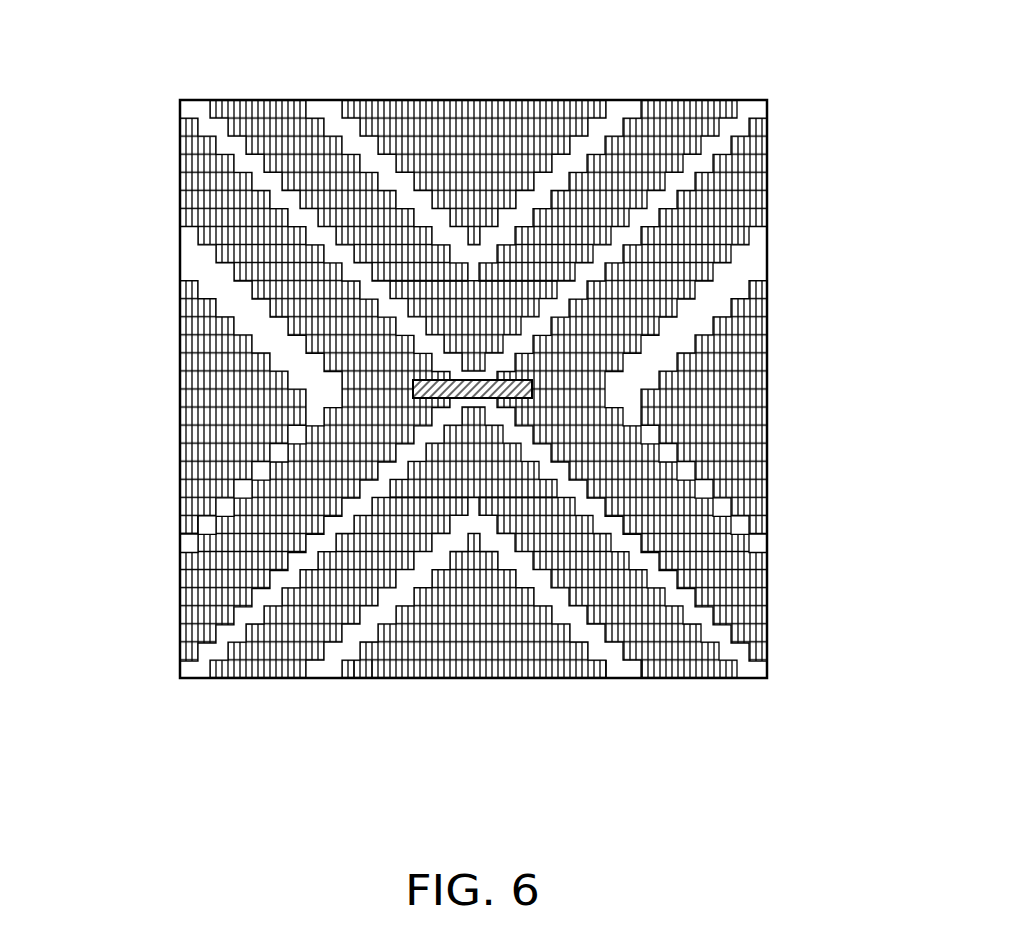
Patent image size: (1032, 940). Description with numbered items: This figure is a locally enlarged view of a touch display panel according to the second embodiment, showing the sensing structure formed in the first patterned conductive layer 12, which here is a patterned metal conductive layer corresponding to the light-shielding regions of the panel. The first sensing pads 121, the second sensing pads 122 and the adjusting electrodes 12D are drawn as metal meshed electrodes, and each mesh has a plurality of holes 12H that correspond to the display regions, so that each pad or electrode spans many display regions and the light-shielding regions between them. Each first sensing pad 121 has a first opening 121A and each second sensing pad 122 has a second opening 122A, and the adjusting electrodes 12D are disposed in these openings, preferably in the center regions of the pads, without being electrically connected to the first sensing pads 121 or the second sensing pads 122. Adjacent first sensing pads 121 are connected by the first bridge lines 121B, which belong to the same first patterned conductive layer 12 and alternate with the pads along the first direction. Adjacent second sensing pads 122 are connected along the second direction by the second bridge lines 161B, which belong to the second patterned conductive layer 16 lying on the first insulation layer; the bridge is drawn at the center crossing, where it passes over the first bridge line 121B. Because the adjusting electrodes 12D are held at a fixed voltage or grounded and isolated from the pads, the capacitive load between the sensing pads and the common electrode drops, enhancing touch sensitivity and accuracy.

The first patterned conductive layer 12 is at (467, 441).
The second patterned conductive layer 16 is at (472, 217).
The second bridge line 161B is at (455, 380).
The second sensing pad 122 is at (180, 166).
The second opening 122A is at (179, 536).
The adjusting electrode 12D is at (180, 360).
The first sensing pad 121 is at (700, 668).
The first bridge line 121B is at (481, 413).
The first opening 121A is at (628, 684).
The hole 12H is at (362, 677).